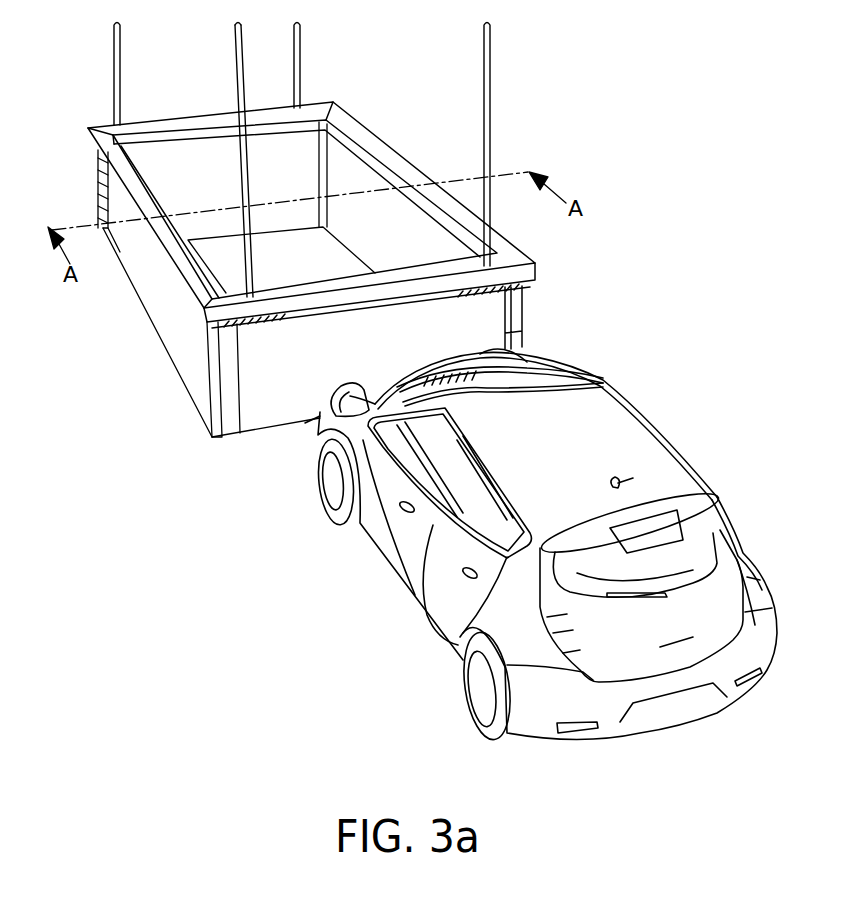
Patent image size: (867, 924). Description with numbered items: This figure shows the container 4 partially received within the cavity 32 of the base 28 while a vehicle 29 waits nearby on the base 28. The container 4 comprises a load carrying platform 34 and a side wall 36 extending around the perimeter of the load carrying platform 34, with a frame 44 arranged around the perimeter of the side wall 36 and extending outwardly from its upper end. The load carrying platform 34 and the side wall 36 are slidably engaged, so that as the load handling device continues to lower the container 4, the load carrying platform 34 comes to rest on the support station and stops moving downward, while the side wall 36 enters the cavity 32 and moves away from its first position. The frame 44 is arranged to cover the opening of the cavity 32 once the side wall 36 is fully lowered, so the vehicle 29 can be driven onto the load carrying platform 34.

The container 4 is at (362, 113).
The frame 44 is at (104, 148).
The cavity 32 is at (143, 316).
The base 28 is at (137, 436).
The load carrying platform 34 is at (294, 266).
The side wall 36 is at (267, 420).
The vehicle 29 is at (653, 420).